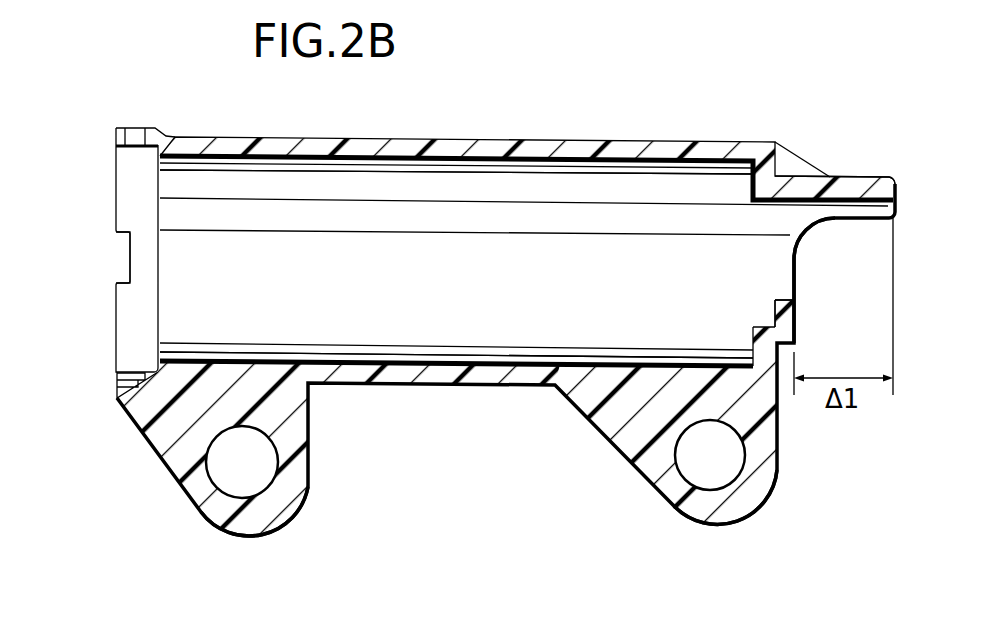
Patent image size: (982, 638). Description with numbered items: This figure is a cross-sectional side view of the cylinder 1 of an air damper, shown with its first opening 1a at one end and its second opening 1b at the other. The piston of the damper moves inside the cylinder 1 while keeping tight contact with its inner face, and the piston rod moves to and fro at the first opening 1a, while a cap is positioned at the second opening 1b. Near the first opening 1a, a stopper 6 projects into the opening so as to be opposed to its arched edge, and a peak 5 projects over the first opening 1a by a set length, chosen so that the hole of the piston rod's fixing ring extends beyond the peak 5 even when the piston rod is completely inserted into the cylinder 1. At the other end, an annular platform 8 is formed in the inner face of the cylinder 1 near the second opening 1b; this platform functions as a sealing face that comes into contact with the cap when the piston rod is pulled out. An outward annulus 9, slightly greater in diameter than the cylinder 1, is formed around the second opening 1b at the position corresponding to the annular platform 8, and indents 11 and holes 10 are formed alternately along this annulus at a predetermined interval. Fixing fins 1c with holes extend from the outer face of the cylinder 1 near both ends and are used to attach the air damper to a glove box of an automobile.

The cylinder 1 is at (597, 130).
The first opening 1a is at (775, 260).
The second opening 1b is at (207, 305).
The fixing fins 1c is at (247, 520).
The peak 5 is at (857, 186).
The stopper 6 is at (783, 310).
The annular platform 8 is at (123, 398).
The outward annulus 9 is at (130, 185).
The holes 10 is at (136, 138).
The indents 11 is at (120, 258).